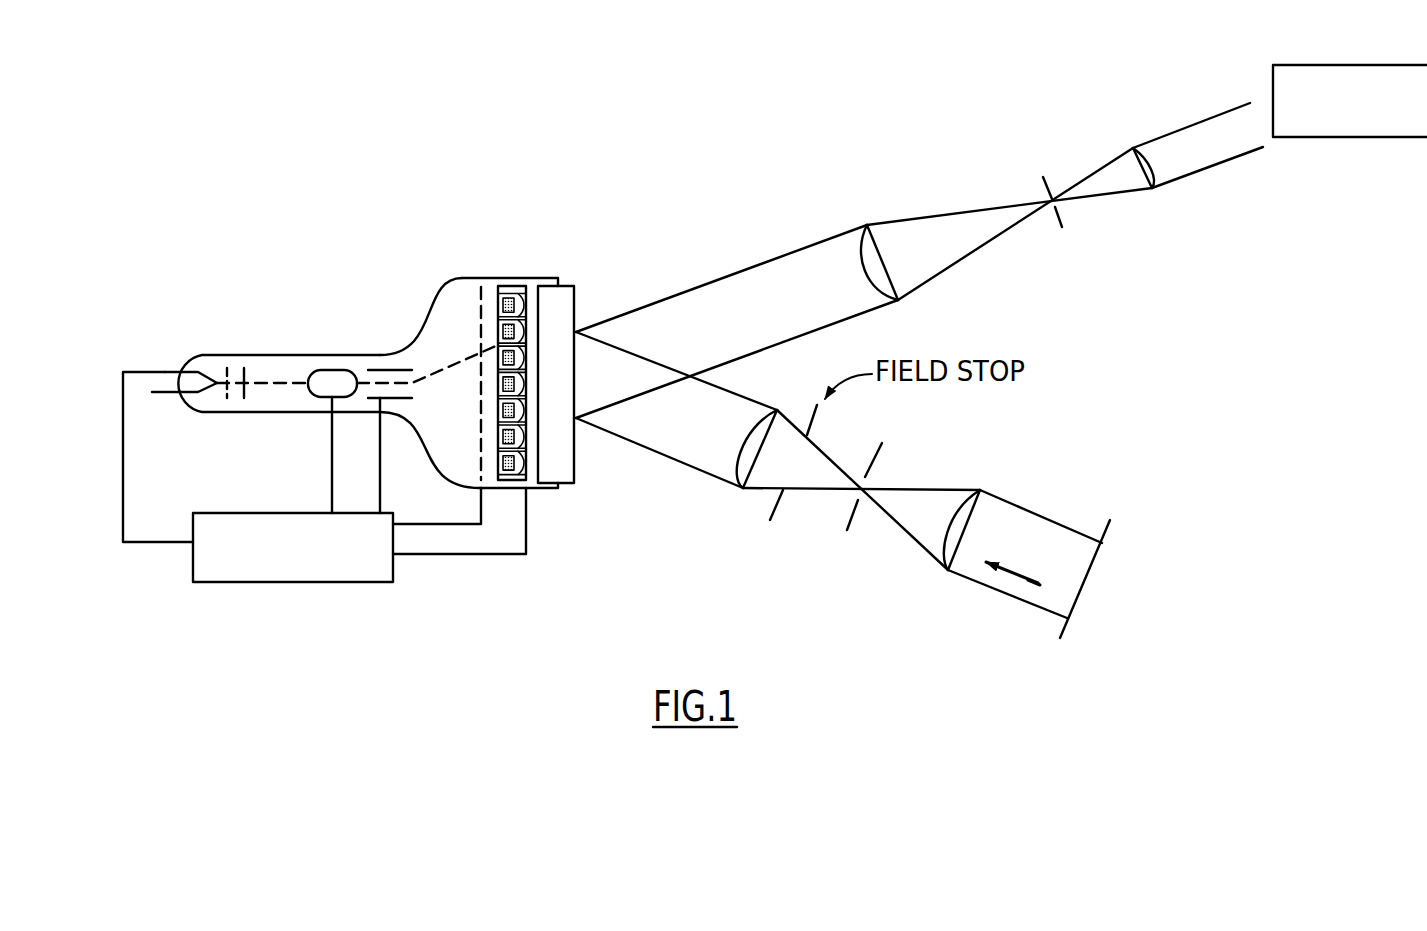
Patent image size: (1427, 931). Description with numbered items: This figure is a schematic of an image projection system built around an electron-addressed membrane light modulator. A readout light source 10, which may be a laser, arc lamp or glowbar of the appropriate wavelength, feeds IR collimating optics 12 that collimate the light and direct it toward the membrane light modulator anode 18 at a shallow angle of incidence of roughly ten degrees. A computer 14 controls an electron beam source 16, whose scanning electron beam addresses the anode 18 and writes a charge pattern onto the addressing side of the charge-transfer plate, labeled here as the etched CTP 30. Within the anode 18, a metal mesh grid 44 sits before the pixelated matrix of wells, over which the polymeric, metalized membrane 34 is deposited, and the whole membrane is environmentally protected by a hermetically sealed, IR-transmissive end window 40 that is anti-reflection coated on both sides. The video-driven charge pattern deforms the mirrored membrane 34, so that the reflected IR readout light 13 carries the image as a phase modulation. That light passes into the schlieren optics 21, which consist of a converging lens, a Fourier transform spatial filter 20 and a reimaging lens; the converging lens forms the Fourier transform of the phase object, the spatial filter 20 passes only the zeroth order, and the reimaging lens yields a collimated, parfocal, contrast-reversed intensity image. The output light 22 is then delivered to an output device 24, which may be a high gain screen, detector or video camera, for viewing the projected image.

The readout light source 10 is at (1420, 117).
The IR collimating optics 12 is at (973, 158).
The reflected IR readout light 13 is at (830, 300).
The computer 14 is at (236, 565).
The electron beam source 16 is at (434, 362).
The membrane light modulator anode 18 is at (553, 273).
The Fourier transform spatial filter 20 is at (884, 441).
The schlieren optics 21 is at (813, 560).
The output light 22 is at (1027, 590).
The output device 24 is at (1175, 562).
The etched CTP 30 is at (506, 281).
The metalized membrane 34 is at (531, 463).
The end window 40 is at (579, 279).
The metal mesh grid 44 is at (456, 310).